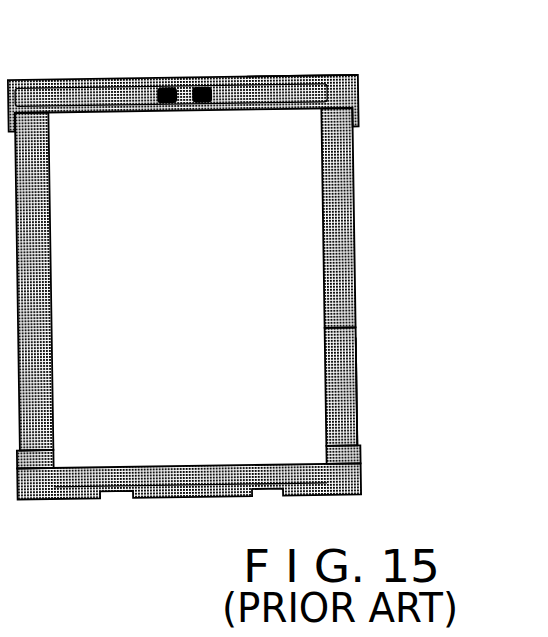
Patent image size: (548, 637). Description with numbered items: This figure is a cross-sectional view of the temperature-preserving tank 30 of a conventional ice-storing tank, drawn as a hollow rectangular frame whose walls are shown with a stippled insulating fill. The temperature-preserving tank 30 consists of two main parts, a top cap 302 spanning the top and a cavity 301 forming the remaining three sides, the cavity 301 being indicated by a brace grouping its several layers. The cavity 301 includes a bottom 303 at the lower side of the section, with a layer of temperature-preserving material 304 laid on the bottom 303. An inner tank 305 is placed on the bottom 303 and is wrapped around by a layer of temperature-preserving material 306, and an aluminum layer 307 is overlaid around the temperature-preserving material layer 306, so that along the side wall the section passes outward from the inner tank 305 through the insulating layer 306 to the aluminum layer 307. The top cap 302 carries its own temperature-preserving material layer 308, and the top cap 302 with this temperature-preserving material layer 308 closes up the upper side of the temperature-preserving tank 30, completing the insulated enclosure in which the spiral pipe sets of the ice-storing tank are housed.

The temperature-preserving tank 30 is at (183, 567).
The cavity 301 is at (474, 505).
The top cap 302 is at (183, 103).
The bottom 303 is at (189, 481).
The temperature-preserving material layer 304 is at (343, 454).
The inner tank 305 is at (357, 391).
The temperature-preserving material layer 306 is at (341, 386).
The aluminum layer 307 is at (338, 218).
The temperature-preserving material layer 308 is at (302, 76).